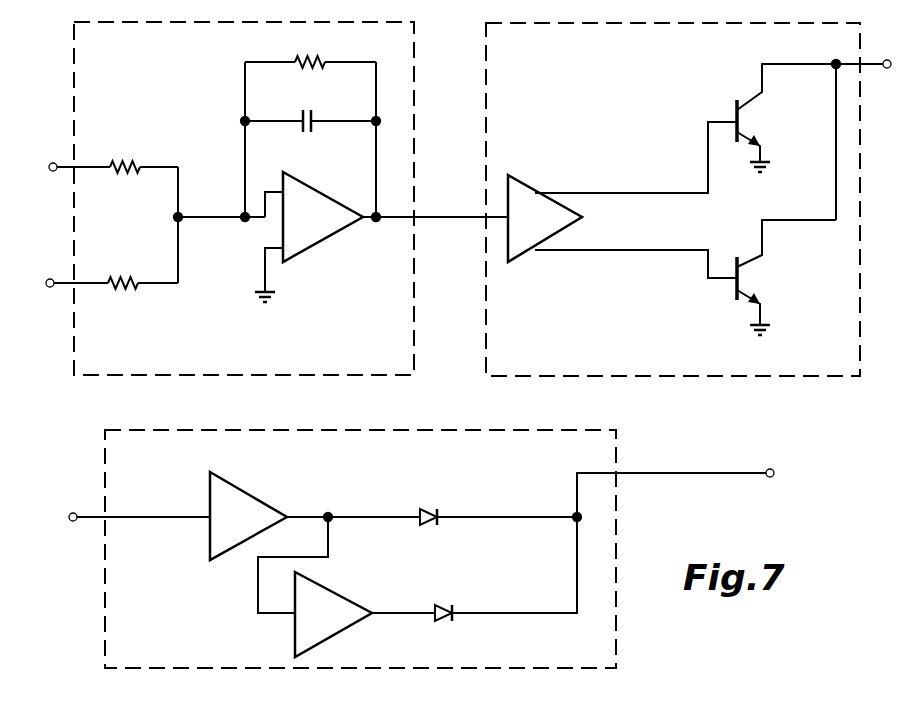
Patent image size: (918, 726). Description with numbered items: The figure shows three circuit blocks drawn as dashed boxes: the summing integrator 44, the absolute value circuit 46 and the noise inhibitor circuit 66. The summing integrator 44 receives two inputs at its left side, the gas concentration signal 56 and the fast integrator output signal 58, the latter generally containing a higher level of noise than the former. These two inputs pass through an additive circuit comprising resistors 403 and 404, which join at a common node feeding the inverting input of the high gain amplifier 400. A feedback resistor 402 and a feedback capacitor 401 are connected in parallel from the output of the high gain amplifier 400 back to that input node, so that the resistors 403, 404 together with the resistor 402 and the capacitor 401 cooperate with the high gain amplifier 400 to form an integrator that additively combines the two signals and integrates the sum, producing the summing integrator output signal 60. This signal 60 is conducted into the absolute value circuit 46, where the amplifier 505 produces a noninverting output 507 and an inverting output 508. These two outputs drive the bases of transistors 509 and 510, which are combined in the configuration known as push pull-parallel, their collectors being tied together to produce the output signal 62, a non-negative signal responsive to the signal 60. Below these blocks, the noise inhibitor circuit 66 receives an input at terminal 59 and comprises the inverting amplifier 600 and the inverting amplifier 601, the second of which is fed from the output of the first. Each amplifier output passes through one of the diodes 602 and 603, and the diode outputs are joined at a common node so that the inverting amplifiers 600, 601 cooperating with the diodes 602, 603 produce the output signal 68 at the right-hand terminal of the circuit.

The summing integrator 44 is at (413, 316).
The absolute value circuit 46 is at (486, 318).
The noise inhibitor circuit 66 is at (616, 622).
The gas concentration signal 56 is at (58, 170).
The fast integrator output signal 58 is at (56, 286).
The input terminal 59 is at (76, 521).
The summing integrator output signal 60 is at (470, 219).
The output signal 62 is at (868, 68).
The output signal 68 is at (748, 477).
The high gain amplifier 400 is at (309, 237).
The capacitor 401 is at (313, 130).
The resistor 402 is at (321, 60).
The resistor 403 is at (144, 160).
The resistor 404 is at (145, 277).
The amplifier 505 is at (545, 221).
The noninverting output 507 is at (658, 194).
The inverting output 508 is at (612, 256).
The transistor 509 is at (745, 125).
The transistor 510 is at (745, 280).
The inverting amplifier 600 is at (255, 516).
The inverting amplifier 601 is at (340, 614).
The diode 602 is at (428, 510).
The diode 603 is at (444, 607).